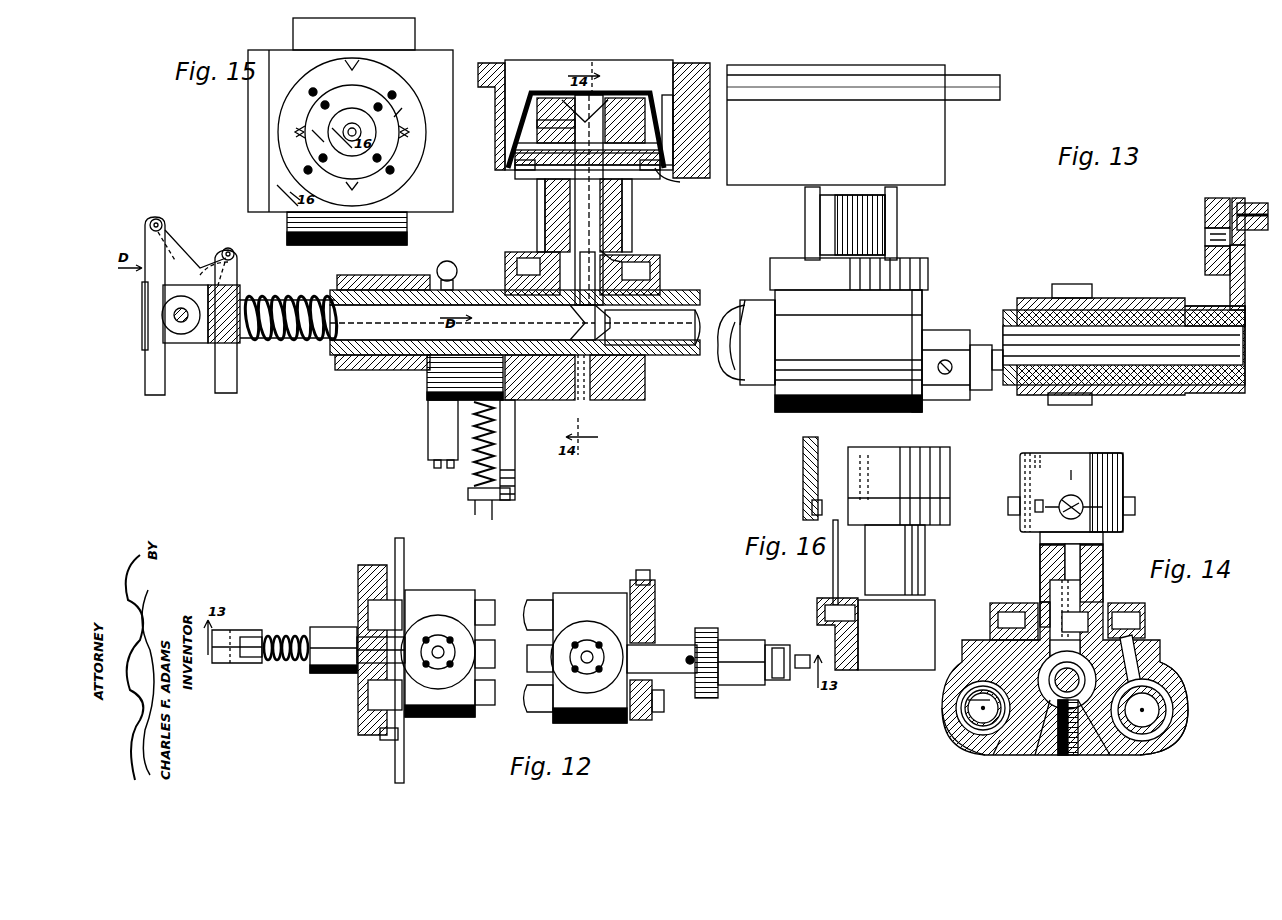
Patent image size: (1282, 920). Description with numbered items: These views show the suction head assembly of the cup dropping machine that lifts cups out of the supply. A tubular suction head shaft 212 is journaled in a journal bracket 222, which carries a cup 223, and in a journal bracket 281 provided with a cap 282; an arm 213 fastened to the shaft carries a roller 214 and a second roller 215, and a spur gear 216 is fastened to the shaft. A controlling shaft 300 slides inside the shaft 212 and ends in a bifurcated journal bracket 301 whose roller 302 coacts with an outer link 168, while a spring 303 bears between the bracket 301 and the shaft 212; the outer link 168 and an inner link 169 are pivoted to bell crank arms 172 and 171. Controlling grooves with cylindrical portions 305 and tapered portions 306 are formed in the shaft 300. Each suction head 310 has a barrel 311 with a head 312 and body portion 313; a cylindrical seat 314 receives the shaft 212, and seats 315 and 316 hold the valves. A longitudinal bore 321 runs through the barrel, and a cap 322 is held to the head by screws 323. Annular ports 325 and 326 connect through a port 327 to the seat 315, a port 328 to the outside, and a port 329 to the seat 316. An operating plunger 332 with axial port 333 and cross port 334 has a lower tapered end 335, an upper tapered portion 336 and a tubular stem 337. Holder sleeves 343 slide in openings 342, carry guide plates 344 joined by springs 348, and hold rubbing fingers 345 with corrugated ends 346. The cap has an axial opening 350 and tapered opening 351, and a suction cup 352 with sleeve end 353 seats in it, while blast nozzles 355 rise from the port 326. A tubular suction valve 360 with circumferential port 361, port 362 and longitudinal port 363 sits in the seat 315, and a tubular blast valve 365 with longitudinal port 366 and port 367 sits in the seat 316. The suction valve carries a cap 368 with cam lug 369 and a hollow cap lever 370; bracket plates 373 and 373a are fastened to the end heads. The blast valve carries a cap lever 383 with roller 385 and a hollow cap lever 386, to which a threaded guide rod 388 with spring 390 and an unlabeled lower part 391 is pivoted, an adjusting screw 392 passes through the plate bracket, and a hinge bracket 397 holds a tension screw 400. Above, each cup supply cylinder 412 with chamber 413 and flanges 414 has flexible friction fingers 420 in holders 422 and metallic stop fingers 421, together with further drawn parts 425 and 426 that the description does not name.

In FIG. 13, the outer link 168 is at (162, 382).
In FIG. 13, the inner link 169 is at (235, 380).
In FIG. 13, the bell crank arm 171 is at (212, 268).
In FIG. 13, the bell crank arm 172 is at (200, 250).
In FIG. 13, the tubular suction head shaft 212 is at (1005, 310).
In FIG. 12, the tubular suction head shaft 212 is at (662, 645).
In FIG. 14, the tubular suction head shaft 212 is at (1075, 708).
In FIG. 13, the arm 213 is at (1245, 278).
In FIG. 12, the arm 213 is at (776, 648).
In FIG. 13, the roller 214 is at (1205, 212).
In FIG. 12, the roller 214 is at (778, 680).
In FIG. 13, the second roller 215 is at (1250, 203).
In FIG. 12, the second roller 215 is at (803, 655).
In FIG. 13, the spur gear 216 is at (1072, 284).
In FIG. 12, the spur gear 216 is at (707, 628).
In FIG. 13, the journal bracket 222 is at (1165, 393).
In FIG. 13, the cup 223 is at (1118, 298).
In FIG. 12, the cup 223 is at (748, 685).
In FIG. 13, the journal bracket 281 is at (368, 370).
In FIG. 13, the cap 282 is at (392, 275).
In FIG. 12, the cap 282 is at (335, 672).
In FIG. 13, the controlling shaft 300 is at (470, 322).
In FIG. 12, the controlling shaft 300 is at (300, 635).
In FIG. 13, the bifurcated journal bracket 301 is at (200, 343).
In FIG. 12, the bifurcated journal bracket 301 is at (252, 636).
In FIG. 13, the roller 302 is at (178, 318).
In FIG. 12, the roller 302 is at (228, 660).
In FIG. 13, the spring 303 is at (292, 340).
In FIG. 12, the spring 303 is at (284, 662).
In FIG. 13, the cylindrical portions 305 is at (606, 322).
In FIG. 14, the cylindrical portions 305 is at (1040, 740).
In FIG. 13, the tapered portions 306 is at (570, 322).
In FIG. 14, the tapered portions 306 is at (1062, 755).
In FIG. 13, the suction head 310 is at (660, 275).
In FIG. 12, the suction head 310 is at (445, 718).
In FIG. 16, the suction head 310 is at (925, 572).
In FIG. 14, the barrel 311 is at (1040, 552).
In FIG. 14, the head 312 is at (1020, 517).
In FIG. 15, the body portion 313 is at (407, 236).
In FIG. 14, the body portion 313 is at (972, 698).
In FIG. 14, the cylindrical seat 314 is at (1085, 705).
In FIG. 14, the seat 315 is at (982, 720).
In FIG. 14, the seat 316 is at (1165, 740).
In FIG. 14, the longitudinal bore 321 is at (1103, 560).
In FIG. 13, the cap 322 is at (673, 108).
In FIG. 14, the cap 322 is at (1123, 470).
In FIG. 14, the screws 323 is at (1038, 458).
In FIG. 14, the annular port 325 is at (1044, 612).
In FIG. 13, the annular port 326 is at (522, 258).
In FIG. 16, the annular port 326 is at (856, 618).
In FIG. 14, the annular port 326 is at (1002, 612).
In FIG. 14, the port 327 is at (1000, 652).
In FIG. 14, the port 328 is at (960, 745).
In FIG. 14, the port 329 is at (1138, 672).
In FIG. 13, the operating plunger 332 is at (603, 225).
In FIG. 14, the operating plunger 332 is at (1080, 595).
In FIG. 14, the axial port 333 is at (1068, 562).
In FIG. 13, the cross port 334 is at (620, 255).
In FIG. 14, the cross port 334 is at (1075, 622).
In FIG. 13, the lower tapered end 335 is at (579, 278).
In FIG. 14, the lower tapered end 335 is at (1066, 646).
In FIG. 13, the upper tapered portion 336 is at (535, 178).
In FIG. 13, the tubular stem 337 is at (537, 124).
In FIG. 14, the openings 342 is at (1068, 495).
In FIG. 14, the holder sleeve 343 is at (1073, 495).
In FIG. 13, the guide plate 344 is at (515, 158).
In FIG. 14, the guide plate 344 is at (1050, 505).
In FIG. 15, the rubbing finger 345 is at (354, 83).
In FIG. 13, the rubbing finger 345 is at (515, 168).
In FIG. 15, the corrugated end 346 is at (302, 132).
In FIG. 13, the corrugated end 346 is at (515, 146).
In FIG. 14, the corrugated end 346 is at (1008, 505).
In FIG. 13, the springs 348 is at (545, 200).
In FIG. 13, the axial opening 350 is at (537, 110).
In FIG. 13, the tapered opening 351 is at (562, 104).
In FIG. 13, the suction cup 352 is at (598, 93).
In FIG. 13, the sleeve end 353 is at (640, 98).
In FIG. 15, the blast nozzles 355 is at (347, 90).
In FIG. 13, the blast nozzles 355 is at (538, 216).
In FIG. 16, the blast nozzles 355 is at (833, 568).
In FIG. 13, the tubular suction valve 360 is at (755, 385).
In FIG. 12, the tubular suction valve 360 is at (535, 712).
In FIG. 14, the tubular suction valve 360 is at (972, 717).
In FIG. 14, the circumferential port 361 is at (995, 755).
In FIG. 14, the port 362 is at (985, 690).
In FIG. 14, the longitudinal port 363 is at (975, 725).
In FIG. 13, the tubular blast valve 365 is at (722, 385).
In FIG. 12, the tubular blast valve 365 is at (540, 600).
In FIG. 14, the tubular blast valve 365 is at (1158, 712).
In FIG. 14, the longitudinal port 366 is at (1168, 708).
In FIG. 14, the port 367 is at (1170, 698).
In FIG. 13, the cap 368 is at (948, 400).
In FIG. 12, the cap 368 is at (642, 720).
In FIG. 13, the cam lug 369 is at (982, 392).
In FIG. 12, the cam lug 369 is at (664, 705).
In FIG. 12, the hollow cap lever 370 is at (358, 725).
In FIG. 13, the bracket plate 373 is at (515, 470).
In FIG. 12, the bracket plate 373 is at (404, 550).
In FIG. 13, the bracket plate 373a is at (922, 300).
In FIG. 12, the cap lever 383 is at (655, 605).
In FIG. 12, the roller 385 is at (643, 570).
In FIG. 12, the hollow cap lever 386 is at (358, 575).
In FIG. 13, the threaded guide rod 388 is at (475, 512).
In FIG. 13, the spring 390 is at (474, 470).
In FIG. 13, the pin 391 is at (492, 515).
In FIG. 13, the adjusting screw 392 is at (455, 266).
In FIG. 13, the hinge bracket 397 is at (428, 438).
In FIG. 13, the tension screw 400 is at (436, 466).
In FIG. 13, the cup supply cylinder 412 is at (492, 63).
In FIG. 15, the chamber 413 is at (352, 70).
In FIG. 13, the flanges 414 is at (975, 90).
In FIG. 15, the flexible friction fingers 420 is at (399, 80).
In FIG. 16, the flexible friction fingers 420 is at (820, 508).
In FIG. 15, the metallic stop fingers 421 is at (285, 128).
In FIG. 13, the metallic stop fingers 421 is at (681, 183).
In FIG. 15, the holder 422 is at (312, 88).
In FIG. 16, the holder 422 is at (803, 490).
In FIG. 13, the frame 425 is at (550, 92).
In FIG. 13, the block 426 is at (710, 120).